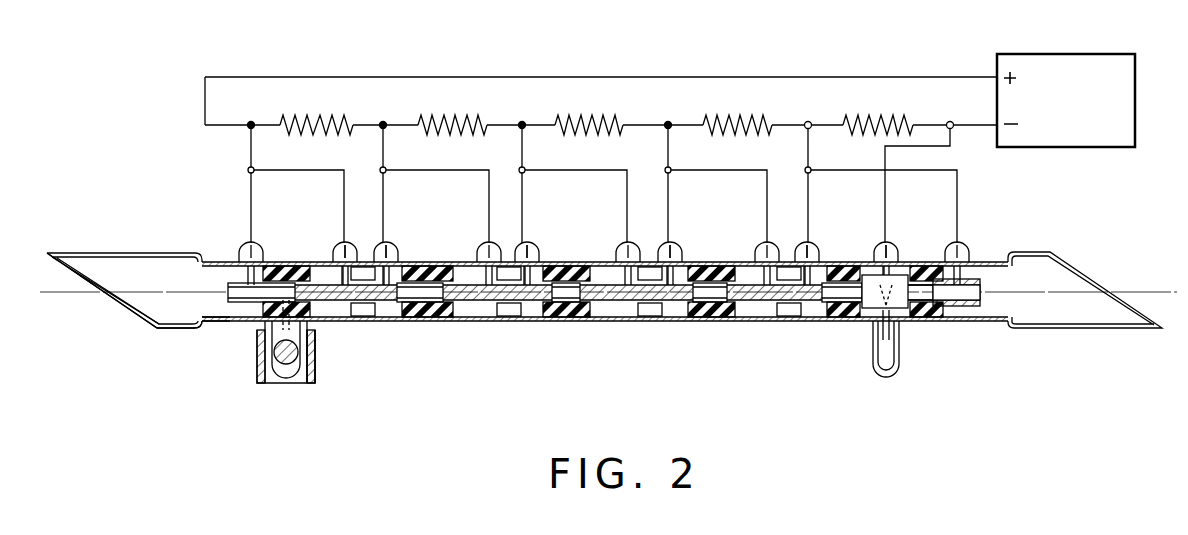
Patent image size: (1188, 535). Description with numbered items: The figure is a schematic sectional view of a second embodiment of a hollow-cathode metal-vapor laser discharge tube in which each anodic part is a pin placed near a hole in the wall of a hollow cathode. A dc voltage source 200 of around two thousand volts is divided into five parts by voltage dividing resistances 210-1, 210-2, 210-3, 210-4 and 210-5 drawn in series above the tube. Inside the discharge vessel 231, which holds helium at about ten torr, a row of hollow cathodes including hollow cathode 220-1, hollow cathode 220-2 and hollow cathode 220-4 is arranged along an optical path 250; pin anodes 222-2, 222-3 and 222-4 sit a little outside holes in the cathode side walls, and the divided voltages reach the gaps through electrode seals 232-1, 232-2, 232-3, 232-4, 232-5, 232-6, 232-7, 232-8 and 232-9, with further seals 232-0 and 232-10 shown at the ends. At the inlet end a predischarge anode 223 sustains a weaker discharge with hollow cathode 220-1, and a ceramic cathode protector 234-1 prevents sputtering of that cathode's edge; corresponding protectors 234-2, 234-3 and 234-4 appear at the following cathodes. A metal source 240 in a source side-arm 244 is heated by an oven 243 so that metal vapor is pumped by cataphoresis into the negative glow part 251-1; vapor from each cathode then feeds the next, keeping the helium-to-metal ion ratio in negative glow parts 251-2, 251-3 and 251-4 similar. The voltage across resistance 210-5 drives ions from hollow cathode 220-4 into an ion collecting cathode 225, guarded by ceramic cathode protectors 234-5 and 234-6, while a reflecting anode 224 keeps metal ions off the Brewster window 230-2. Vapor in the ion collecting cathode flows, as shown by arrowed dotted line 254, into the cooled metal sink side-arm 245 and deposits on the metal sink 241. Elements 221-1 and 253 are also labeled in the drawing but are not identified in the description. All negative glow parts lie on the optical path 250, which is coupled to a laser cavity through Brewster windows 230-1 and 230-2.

The dc voltage source 200 is at (1050, 54).
The voltage dividing resistance 210-1 is at (320, 120).
The voltage dividing resistance 210-2 is at (457, 120).
The voltage dividing resistance 210-3 is at (595, 120).
The voltage dividing resistance 210-4 is at (740, 122).
The voltage dividing resistance 210-5 is at (880, 122).
The hollow cathode 220-1 is at (422, 322).
The hollow cathode 220-2 is at (566, 322).
The hollow cathode 220-4 is at (842, 322).
The rod electrode 221-1 is at (362, 302).
The pin anode 222-2 is at (515, 283).
The pin anode 222-3 is at (648, 283).
The pin anode 222-4 is at (790, 283).
The predischarge anode 223 is at (226, 322).
The reflecting anode 224 is at (970, 322).
The ion collecting cathode 225 is at (928, 320).
The Brewster window 230-1 is at (103, 303).
The Brewster window 230-2 is at (1103, 286).
The discharge vessel 231 is at (170, 332).
The terminal 232-0 is at (249, 244).
The electrode seal 232-1 is at (342, 246).
The electrode seal 232-2 is at (487, 246).
The electrode seal 232-3 is at (625, 246).
The electrode seal 232-4 is at (765, 246).
The electrode seal 232-5 is at (883, 246).
The electrode seal 232-6 is at (386, 246).
The electrode seal 232-7 is at (527, 246).
The electrode seal 232-8 is at (669, 246).
The electrode seal 232-9 is at (805, 246).
The terminal 232-10 is at (960, 245).
The ceramic cathode protector 234-1 is at (298, 262).
The lead wire 234-2 is at (438, 262).
The lead wire 234-3 is at (573, 262).
The lead wire 234-4 is at (708, 262).
The ceramic cathode protector 234-5 is at (838, 262).
The ceramic cathode protector 234-6 is at (918, 262).
The metal source 240 is at (298, 386).
The metal sink 241 is at (896, 370).
The oven 243 is at (316, 380).
The source side-arm 244 is at (262, 386).
The metal sink side-arm 245 is at (901, 372).
The optical path 250 is at (153, 296).
The negative glow part 251-1 is at (370, 318).
The negative glow part 251-2 is at (470, 302).
The negative glow part 251-3 is at (625, 320).
The negative glow part 251-4 is at (768, 322).
The conductor 253 is at (262, 358).
The arrowed dotted line 254 is at (878, 300).